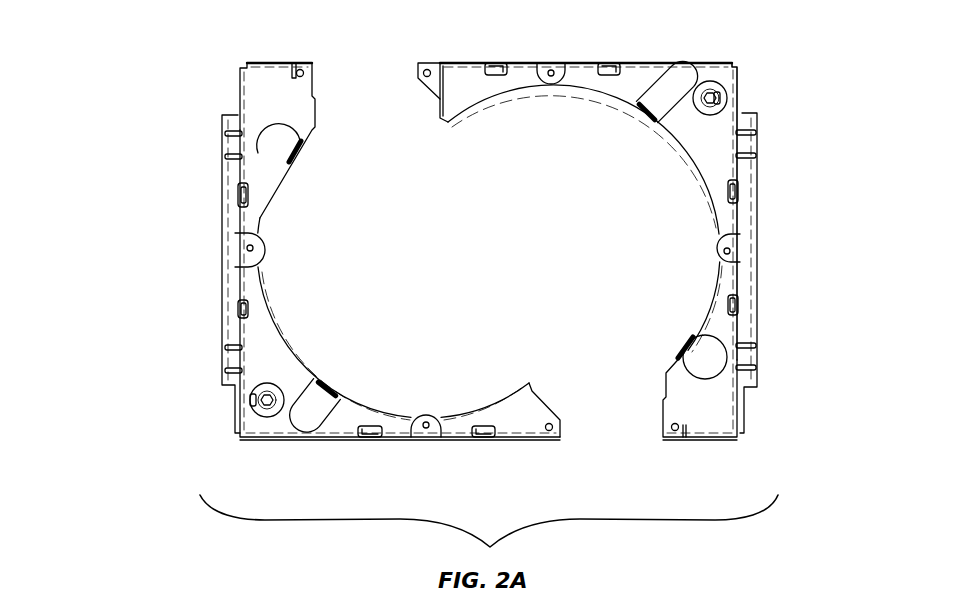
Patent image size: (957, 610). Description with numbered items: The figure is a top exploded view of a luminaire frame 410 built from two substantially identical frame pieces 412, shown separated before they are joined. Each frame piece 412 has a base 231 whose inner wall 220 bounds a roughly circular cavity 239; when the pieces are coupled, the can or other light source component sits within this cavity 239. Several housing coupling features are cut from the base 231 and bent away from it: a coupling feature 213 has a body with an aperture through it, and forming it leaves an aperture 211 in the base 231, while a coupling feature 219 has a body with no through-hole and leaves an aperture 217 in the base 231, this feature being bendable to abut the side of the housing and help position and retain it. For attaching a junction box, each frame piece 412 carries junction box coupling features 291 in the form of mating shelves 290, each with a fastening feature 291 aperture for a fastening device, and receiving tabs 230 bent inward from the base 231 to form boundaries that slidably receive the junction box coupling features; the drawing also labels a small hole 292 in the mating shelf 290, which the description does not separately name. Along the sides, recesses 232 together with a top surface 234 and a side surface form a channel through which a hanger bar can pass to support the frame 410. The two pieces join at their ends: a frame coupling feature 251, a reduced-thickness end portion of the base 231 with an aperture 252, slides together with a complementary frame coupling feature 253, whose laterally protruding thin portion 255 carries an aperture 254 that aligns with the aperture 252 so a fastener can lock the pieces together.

The frame 410 is at (149, 44).
The frame coupling feature 251 is at (274, 54).
The aperture 252 is at (304, 75).
The complementary frame coupling feature 253 is at (424, 97).
The aperture 254 is at (423, 72).
The portion 255 is at (438, 62).
The receiving tab 230 is at (505, 62).
The base 231 is at (632, 62).
The aperture 211 is at (673, 88).
The frame piece 412 is at (746, 49).
The coupling feature 213 is at (641, 121).
The recess 232 is at (232, 143).
The top surface 234 is at (232, 190).
The hole 292 is at (246, 246).
The mating shelf 290 is at (240, 258).
The coupling feature 291 is at (272, 247).
The cavity 239 is at (509, 254).
The inner wall 220 is at (277, 316).
The coupling feature 219 is at (680, 338).
The aperture 217 is at (700, 358).